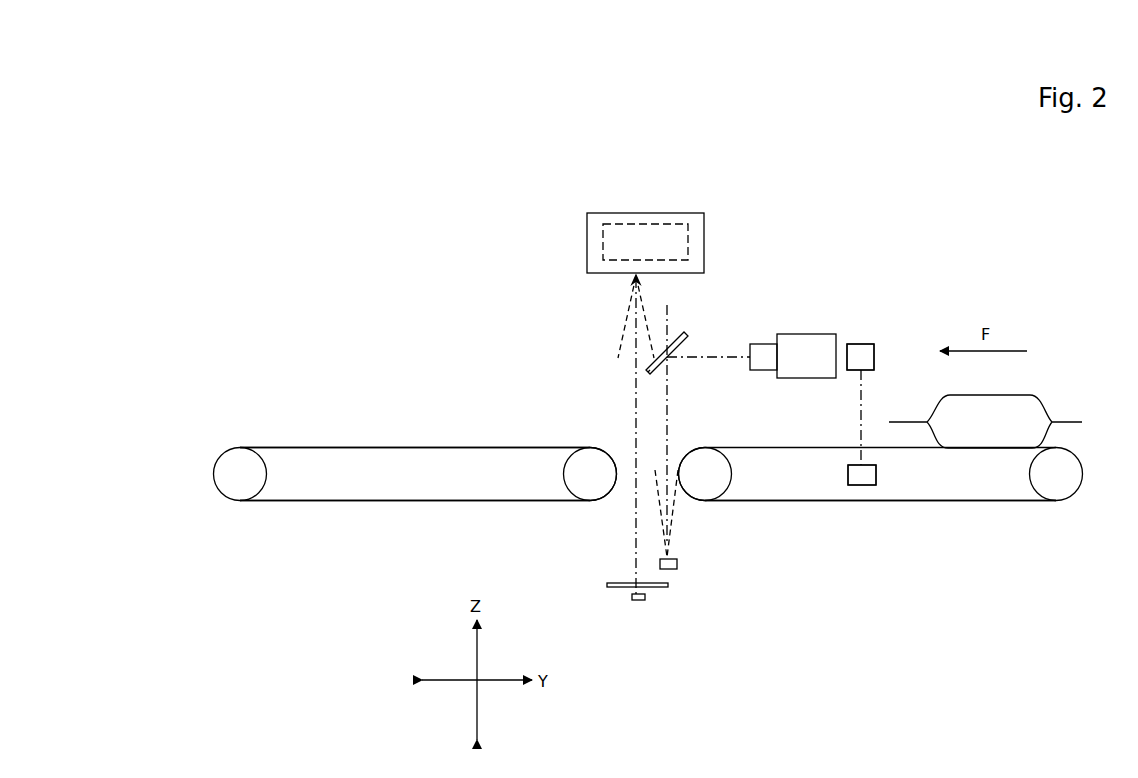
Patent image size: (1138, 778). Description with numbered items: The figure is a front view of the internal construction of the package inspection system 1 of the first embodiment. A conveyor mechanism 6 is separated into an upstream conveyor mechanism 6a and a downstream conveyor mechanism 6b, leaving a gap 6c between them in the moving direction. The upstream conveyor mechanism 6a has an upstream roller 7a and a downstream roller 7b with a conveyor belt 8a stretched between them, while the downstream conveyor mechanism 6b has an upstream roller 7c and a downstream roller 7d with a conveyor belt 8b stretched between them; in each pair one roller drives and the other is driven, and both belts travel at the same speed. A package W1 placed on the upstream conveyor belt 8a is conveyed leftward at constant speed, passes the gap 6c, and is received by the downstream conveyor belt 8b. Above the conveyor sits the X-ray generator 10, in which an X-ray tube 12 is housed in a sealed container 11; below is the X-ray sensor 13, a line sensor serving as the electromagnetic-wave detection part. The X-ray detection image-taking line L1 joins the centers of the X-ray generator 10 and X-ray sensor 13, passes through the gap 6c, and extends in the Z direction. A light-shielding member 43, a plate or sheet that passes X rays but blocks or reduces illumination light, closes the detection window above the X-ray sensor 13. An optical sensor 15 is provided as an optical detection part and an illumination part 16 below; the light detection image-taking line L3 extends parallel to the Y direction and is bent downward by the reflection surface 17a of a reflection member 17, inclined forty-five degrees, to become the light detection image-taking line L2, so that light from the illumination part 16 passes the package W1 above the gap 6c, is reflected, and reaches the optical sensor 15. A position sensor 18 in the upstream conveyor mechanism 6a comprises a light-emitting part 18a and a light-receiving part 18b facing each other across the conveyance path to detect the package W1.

The package inspection system 1 is at (470, 212).
The X-ray generator 10 is at (611, 208).
The sealed container 11 is at (587, 250).
The X-ray tube 12 is at (659, 236).
The X-ray sensor 13 is at (638, 600).
The optical sensor 15 is at (800, 344).
The illumination part 16 is at (672, 569).
The reflection member 17 is at (684, 340).
The reflection surface 17a is at (654, 370).
The position sensor 18 is at (883, 352).
The light-emitting part 18a is at (861, 352).
The light-receiving part 18b is at (866, 478).
The light-shielding member 43 is at (613, 587).
The conveyor mechanism 6 is at (458, 505).
The upstream conveyor mechanism 6a is at (830, 505).
The downstream conveyor mechanism 6b is at (360, 505).
The gap 6c is at (630, 490).
The upstream roller 7a is at (1058, 488).
The downstream roller 7b is at (713, 490).
The upstream roller 7c is at (580, 483).
The downstream roller 7d is at (242, 490).
The upstream conveyor belt 8a is at (918, 502).
The downstream conveyor belt 8b is at (312, 447).
The X-ray detection image-taking line L1 is at (634, 392).
The light detection image-taking line L2 is at (669, 430).
The light detection image-taking line L3 is at (718, 355).
The package W1 is at (1020, 412).